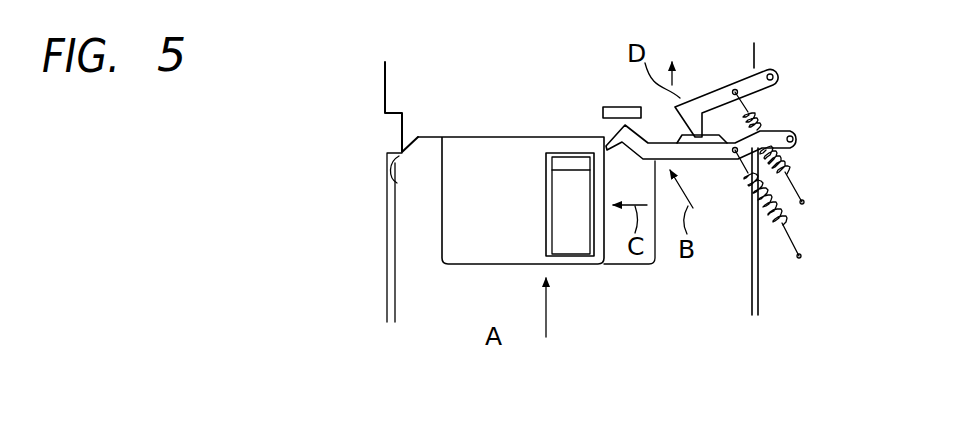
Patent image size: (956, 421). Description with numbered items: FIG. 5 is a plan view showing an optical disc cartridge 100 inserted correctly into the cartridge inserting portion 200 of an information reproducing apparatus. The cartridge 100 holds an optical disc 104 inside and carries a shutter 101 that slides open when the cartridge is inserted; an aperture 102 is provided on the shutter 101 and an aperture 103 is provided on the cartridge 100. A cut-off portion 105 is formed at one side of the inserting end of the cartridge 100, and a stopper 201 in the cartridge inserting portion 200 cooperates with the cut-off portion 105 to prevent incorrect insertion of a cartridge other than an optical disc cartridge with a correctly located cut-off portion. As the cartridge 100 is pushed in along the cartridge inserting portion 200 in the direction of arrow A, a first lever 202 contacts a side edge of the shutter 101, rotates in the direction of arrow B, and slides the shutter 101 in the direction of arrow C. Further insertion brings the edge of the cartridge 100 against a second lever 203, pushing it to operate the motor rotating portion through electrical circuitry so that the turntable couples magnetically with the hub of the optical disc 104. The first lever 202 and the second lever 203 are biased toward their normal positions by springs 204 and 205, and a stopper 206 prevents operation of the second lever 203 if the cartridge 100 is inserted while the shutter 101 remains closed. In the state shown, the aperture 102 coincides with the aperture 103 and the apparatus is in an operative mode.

The cartridge 100 is at (644, 318).
The shutter 101 is at (508, 137).
The aperture 102 is at (545, 184).
The aperture 103 is at (548, 208).
The optical disc 104 is at (565, 232).
The cut-off portion 105 is at (388, 182).
The cartridge inserting portion 200 is at (334, 303).
The stopper 201 is at (397, 140).
The first lever 202 is at (702, 156).
The second lever 203 is at (717, 98).
The spring 204 is at (783, 218).
The spring 205 is at (787, 163).
The stopper 206 is at (622, 108).